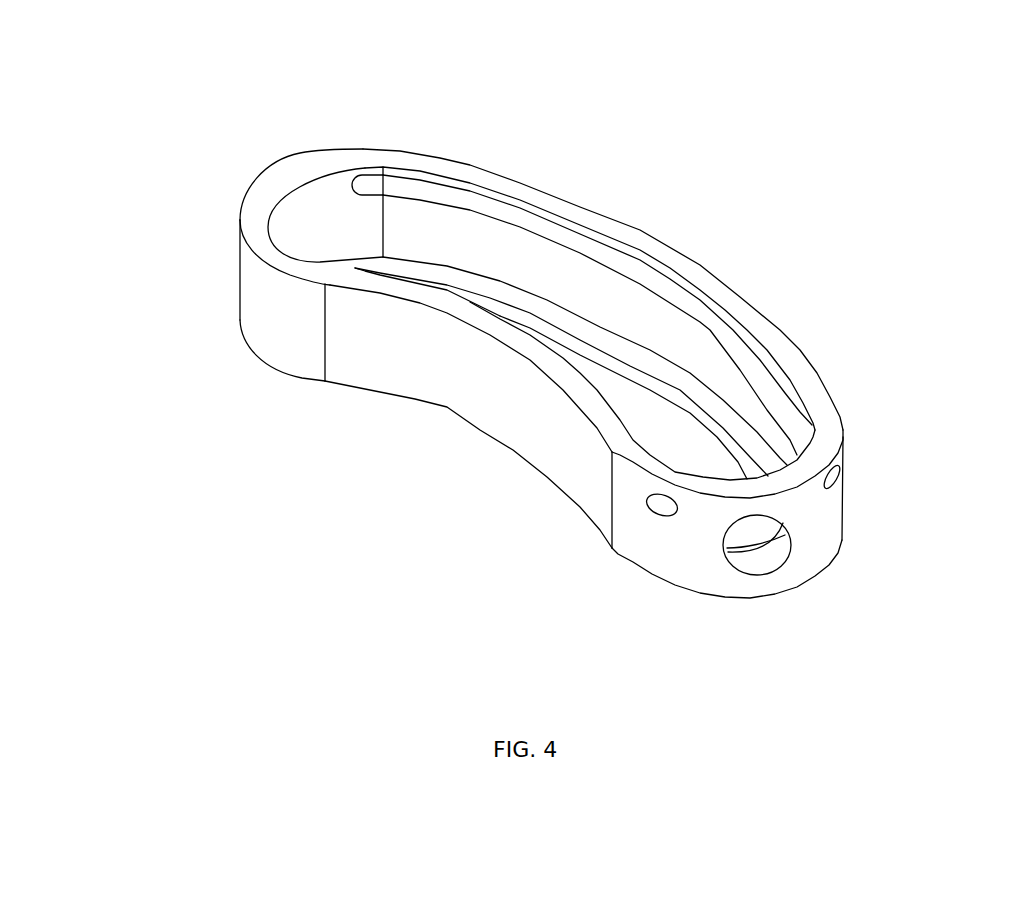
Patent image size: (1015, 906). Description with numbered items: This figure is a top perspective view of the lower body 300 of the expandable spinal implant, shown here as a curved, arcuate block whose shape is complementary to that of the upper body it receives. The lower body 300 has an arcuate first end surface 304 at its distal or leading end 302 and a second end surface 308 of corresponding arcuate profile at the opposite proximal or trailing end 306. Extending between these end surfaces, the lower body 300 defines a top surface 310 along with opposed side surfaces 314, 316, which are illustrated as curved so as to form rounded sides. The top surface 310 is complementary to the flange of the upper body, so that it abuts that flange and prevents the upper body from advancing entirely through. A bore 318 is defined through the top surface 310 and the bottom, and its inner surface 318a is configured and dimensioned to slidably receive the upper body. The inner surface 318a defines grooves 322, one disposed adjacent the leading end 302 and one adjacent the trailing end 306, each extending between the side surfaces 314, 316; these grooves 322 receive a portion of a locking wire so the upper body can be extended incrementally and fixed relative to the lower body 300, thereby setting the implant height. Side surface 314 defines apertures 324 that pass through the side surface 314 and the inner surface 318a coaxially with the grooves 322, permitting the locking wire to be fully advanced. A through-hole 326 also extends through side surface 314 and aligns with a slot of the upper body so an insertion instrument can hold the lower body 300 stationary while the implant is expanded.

The lower body 300 is at (582, 263).
The distal or leading end 302 is at (468, 416).
The first end surface 304 is at (449, 464).
The proximal or trailing end 306 is at (775, 407).
The second end surface 308 is at (571, 298).
The top surface 310 is at (585, 307).
The side surface 314 is at (787, 547).
The side surface 316 is at (232, 300).
The bore 318 is at (583, 327).
The inner surface 318a is at (360, 153).
The grooves 322 is at (585, 272).
The apertures 324 is at (745, 542).
The through-hole 326 is at (699, 595).